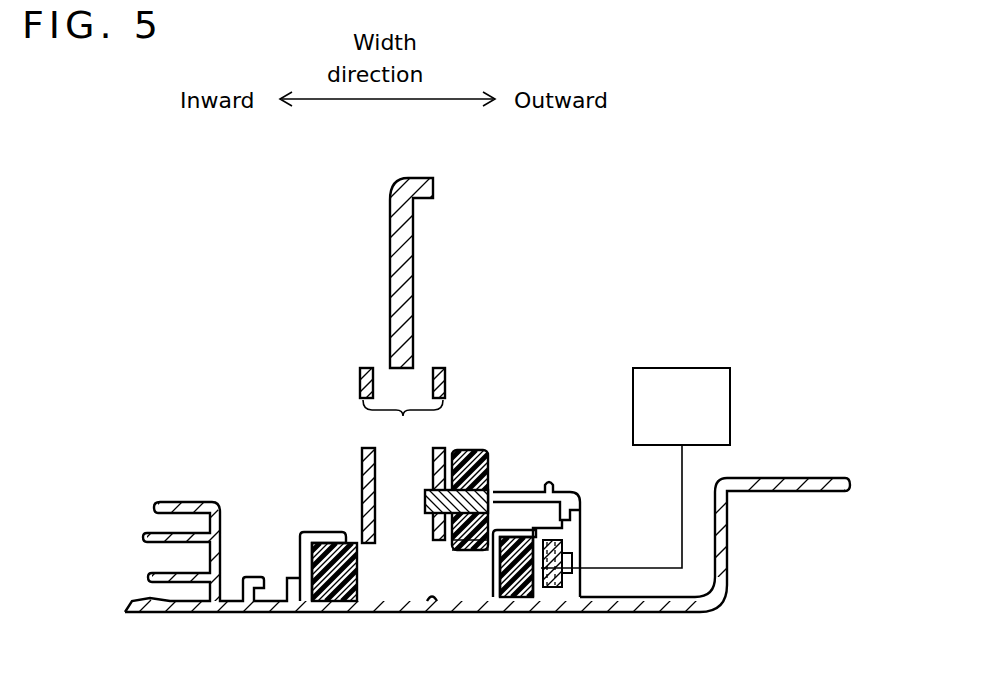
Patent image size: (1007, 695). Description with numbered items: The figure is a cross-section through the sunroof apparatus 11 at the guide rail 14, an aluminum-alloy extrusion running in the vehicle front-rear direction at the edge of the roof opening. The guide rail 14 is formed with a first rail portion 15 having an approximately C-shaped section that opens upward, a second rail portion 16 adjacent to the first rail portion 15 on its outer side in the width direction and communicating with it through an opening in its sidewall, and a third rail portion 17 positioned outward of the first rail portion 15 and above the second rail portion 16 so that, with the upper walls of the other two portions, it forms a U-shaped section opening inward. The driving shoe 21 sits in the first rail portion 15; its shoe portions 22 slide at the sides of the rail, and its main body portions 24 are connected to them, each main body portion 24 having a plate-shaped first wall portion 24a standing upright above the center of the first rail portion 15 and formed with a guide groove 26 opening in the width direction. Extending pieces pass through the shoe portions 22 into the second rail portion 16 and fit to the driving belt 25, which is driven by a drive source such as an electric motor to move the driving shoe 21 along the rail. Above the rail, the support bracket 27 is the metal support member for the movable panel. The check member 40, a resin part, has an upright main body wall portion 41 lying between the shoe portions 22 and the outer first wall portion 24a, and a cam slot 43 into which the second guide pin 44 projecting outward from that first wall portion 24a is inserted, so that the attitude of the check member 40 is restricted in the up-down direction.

The sunroof apparatus 11 is at (661, 352).
The guide rail 14 is at (728, 562).
The first rail portion 15 is at (428, 601).
The second rail portion 16 is at (553, 592).
The third rail portion 17 is at (570, 512).
The driving shoe 21 is at (401, 353).
The shoe portion 22 is at (338, 601).
The main body portion 24 is at (361, 462).
The first wall portion 24a is at (470, 380).
The driving belt 25 is at (580, 536).
The guide groove 26 is at (403, 425).
The support bracket 27 is at (408, 186).
The check member 40 is at (488, 462).
The main body wall portion 41 is at (434, 533).
The cam slot 43 is at (427, 491).
The second guide pin 44 is at (480, 549).